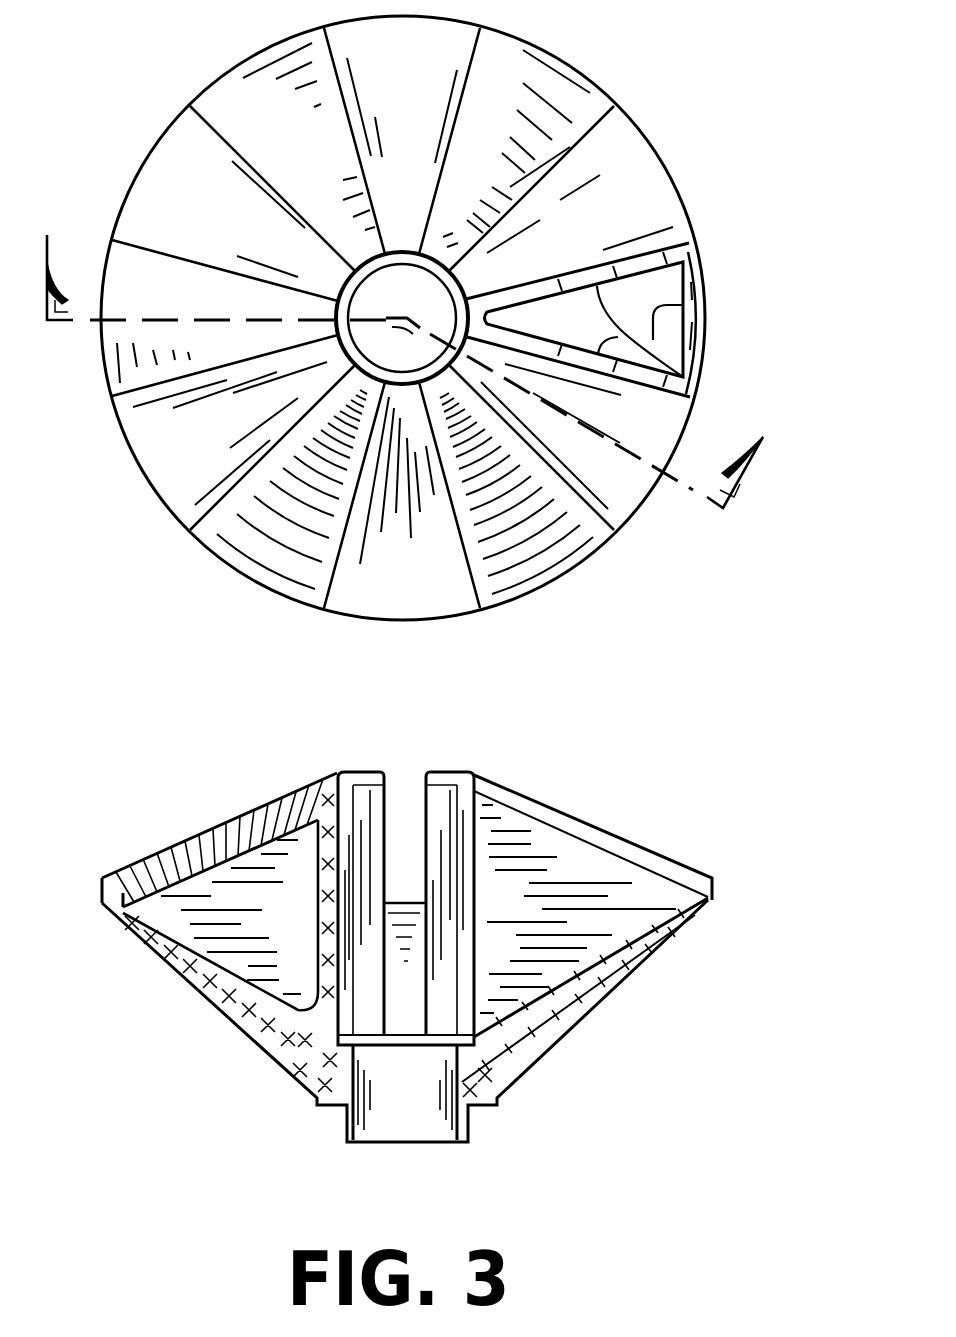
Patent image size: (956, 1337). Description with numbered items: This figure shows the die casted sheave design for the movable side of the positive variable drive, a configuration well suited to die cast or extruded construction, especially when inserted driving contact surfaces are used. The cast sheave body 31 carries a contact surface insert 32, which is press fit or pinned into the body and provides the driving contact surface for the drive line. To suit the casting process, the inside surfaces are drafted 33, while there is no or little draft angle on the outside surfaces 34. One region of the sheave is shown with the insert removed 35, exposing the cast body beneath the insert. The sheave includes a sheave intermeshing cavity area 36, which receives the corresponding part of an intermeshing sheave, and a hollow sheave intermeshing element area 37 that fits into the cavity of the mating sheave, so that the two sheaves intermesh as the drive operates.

The sheave body 31 is at (250, 1043).
The contact surface insert 32 is at (263, 805).
The inside surfaces drafted 33 is at (703, 366).
The outside surfaces with no or little draft angle 34 is at (555, 340).
The area shown with insert removed 35 is at (637, 290).
The sheave intermeshing cavity area 36 is at (546, 934).
The sheave intermeshing element area 37 is at (245, 918).